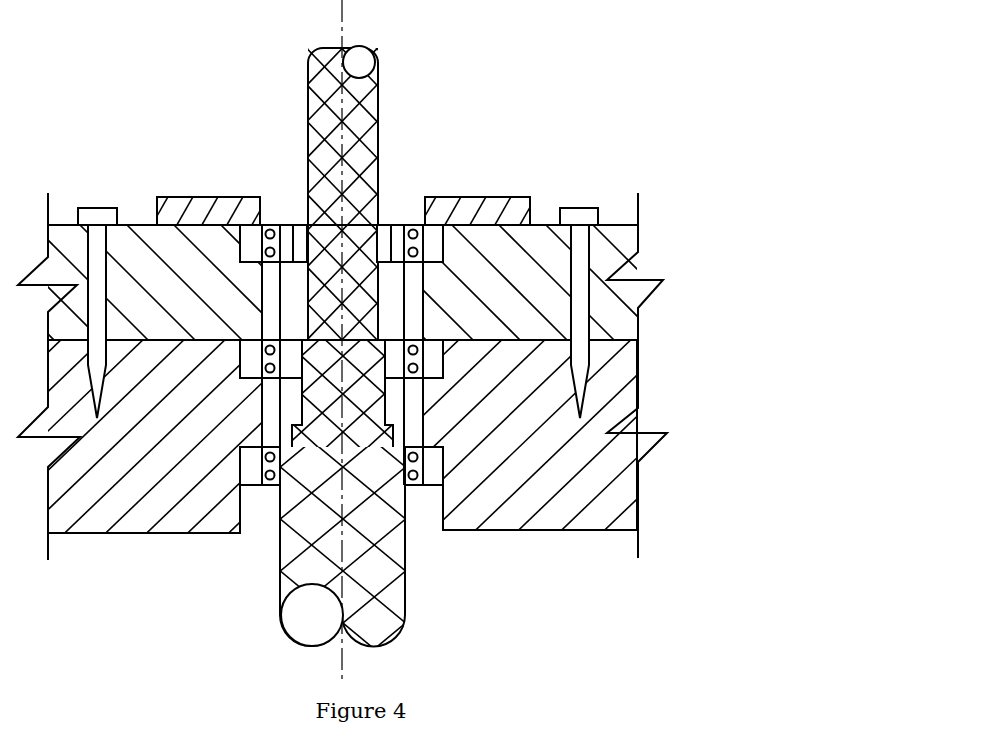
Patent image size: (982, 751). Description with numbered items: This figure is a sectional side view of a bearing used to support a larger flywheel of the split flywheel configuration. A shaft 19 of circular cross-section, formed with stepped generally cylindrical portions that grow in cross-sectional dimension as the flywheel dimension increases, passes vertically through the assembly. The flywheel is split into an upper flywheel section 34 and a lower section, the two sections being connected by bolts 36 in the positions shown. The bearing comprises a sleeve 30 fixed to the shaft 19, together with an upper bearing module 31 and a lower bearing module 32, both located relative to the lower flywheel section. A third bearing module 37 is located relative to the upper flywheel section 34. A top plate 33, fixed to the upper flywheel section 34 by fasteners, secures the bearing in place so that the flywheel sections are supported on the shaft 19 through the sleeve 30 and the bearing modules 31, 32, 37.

The shaft 19 is at (384, 134).
The sleeve 30 is at (302, 221).
The upper bearing module 31 is at (238, 382).
The lower bearing module 32 is at (248, 492).
The top plate 33 is at (166, 193).
The upper flywheel section 34 is at (359, 309).
The bolts 36 is at (594, 286).
The third bearing module 37 is at (273, 221).